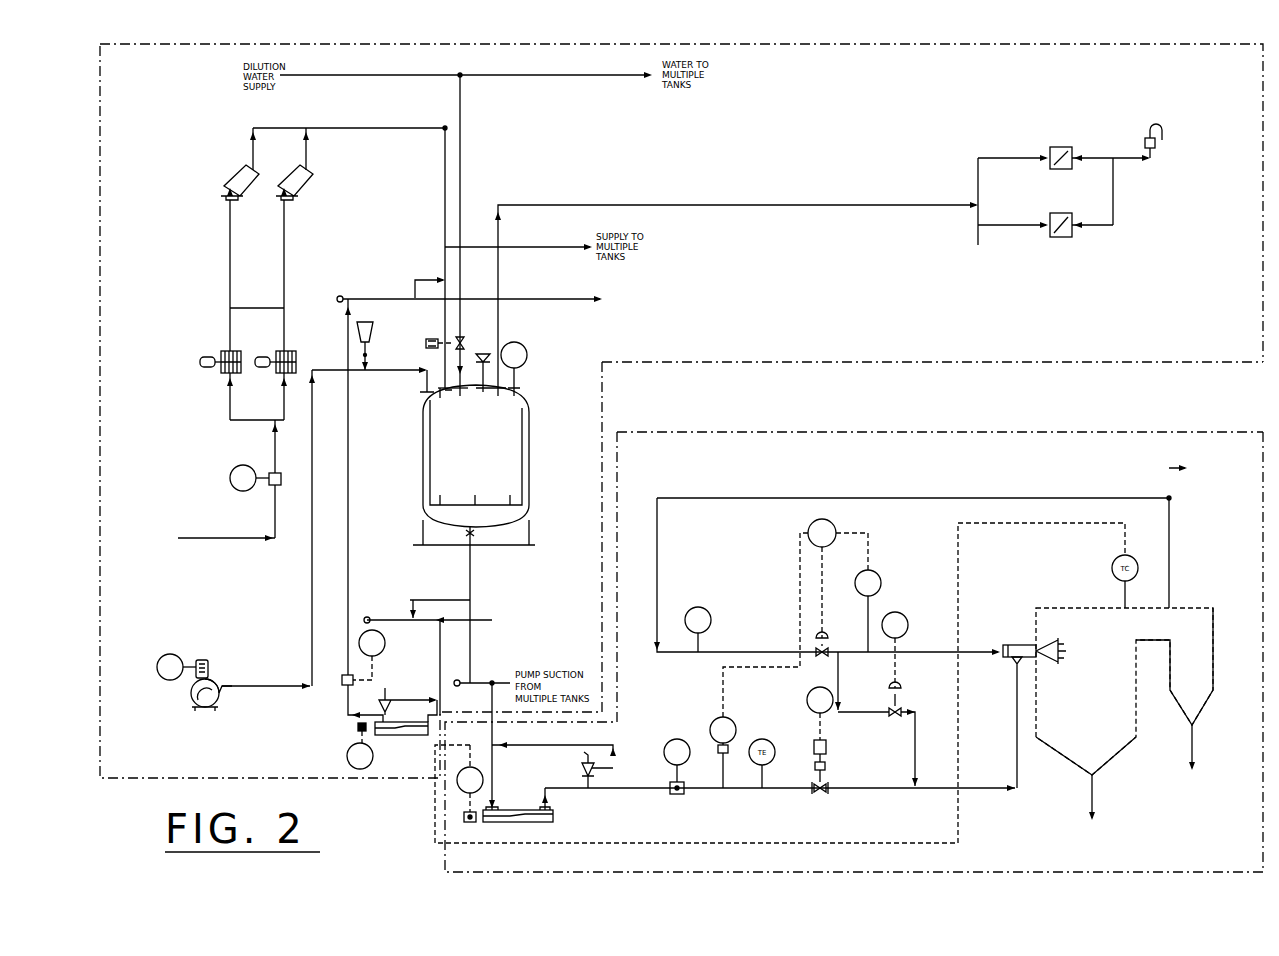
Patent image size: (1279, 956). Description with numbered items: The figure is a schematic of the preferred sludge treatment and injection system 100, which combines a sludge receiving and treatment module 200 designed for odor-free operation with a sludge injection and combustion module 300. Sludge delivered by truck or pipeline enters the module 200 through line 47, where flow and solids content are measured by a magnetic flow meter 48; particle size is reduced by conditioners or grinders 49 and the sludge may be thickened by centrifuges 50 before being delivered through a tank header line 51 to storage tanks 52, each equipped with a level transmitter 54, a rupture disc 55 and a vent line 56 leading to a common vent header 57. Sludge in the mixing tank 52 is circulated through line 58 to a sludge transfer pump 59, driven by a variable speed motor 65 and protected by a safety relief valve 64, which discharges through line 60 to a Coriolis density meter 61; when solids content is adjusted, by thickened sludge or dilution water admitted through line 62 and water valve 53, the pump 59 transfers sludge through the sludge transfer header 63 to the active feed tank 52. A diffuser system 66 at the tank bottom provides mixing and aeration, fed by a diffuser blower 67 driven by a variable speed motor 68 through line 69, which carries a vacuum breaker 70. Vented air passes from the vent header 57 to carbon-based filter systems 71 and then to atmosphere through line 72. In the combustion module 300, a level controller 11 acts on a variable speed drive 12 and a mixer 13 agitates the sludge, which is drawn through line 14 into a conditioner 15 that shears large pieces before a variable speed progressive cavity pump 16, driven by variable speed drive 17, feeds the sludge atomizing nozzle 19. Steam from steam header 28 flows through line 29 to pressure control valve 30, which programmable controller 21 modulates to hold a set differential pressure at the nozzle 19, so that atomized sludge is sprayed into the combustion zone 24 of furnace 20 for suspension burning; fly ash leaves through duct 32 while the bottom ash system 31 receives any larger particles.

The level controller 11 is at (624, 789).
The variable speed drive 12 is at (892, 719).
The mixer 13 is at (823, 797).
The line 14 is at (671, 797).
The conditioner 15 is at (581, 770).
The variable speed progressive cavity pump 16 is at (547, 821).
The variable speed drive 17 is at (470, 830).
The sludge atomizing nozzle 19 is at (1056, 644).
The furnace 20 is at (1137, 736).
The programmable controller 21 is at (795, 649).
The combustion zone 24 is at (1124, 691).
The steam header 28 is at (1099, 498).
The line 29 is at (769, 651).
The pressure control valve 30 is at (831, 648).
The bottom ash system 31 is at (1098, 848).
The duct 32 is at (1183, 709).
The line 47 is at (244, 536).
The magnetic flow meter 48 is at (282, 470).
The conditioners or grinders 49 is at (280, 350).
The centrifuges 50 is at (300, 174).
The tank header line 51 is at (365, 126).
The storage tank 52 is at (474, 492).
The water valve 53 is at (461, 338).
The level transmitter 54 is at (522, 342).
The rupture disc 55 is at (480, 353).
The vent line 56 is at (546, 204).
The common vent header 57 is at (979, 172).
The line 58 is at (404, 618).
The sludge transfer pump 59 is at (384, 735).
The line 60 is at (346, 695).
The Coriolis density meter 61 is at (343, 676).
The line 62 is at (465, 140).
The sludge transfer header 63 is at (358, 297).
The safety relief valve 64 is at (388, 692).
The variable speed motor 65 is at (356, 730).
The diffuser system 66 is at (511, 500).
The diffuser blower 67 is at (222, 704).
The variable speed motor 68 is at (208, 660).
The line 69 is at (282, 684).
The vacuum breaker 70 is at (374, 332).
The filter systems 71 is at (1072, 202).
The line 72 is at (1126, 166).
The system 100 is at (1203, 430).
The sludge receiving and treatment module 200 is at (714, 40).
The sludge injection and combustion module 300 is at (1098, 430).